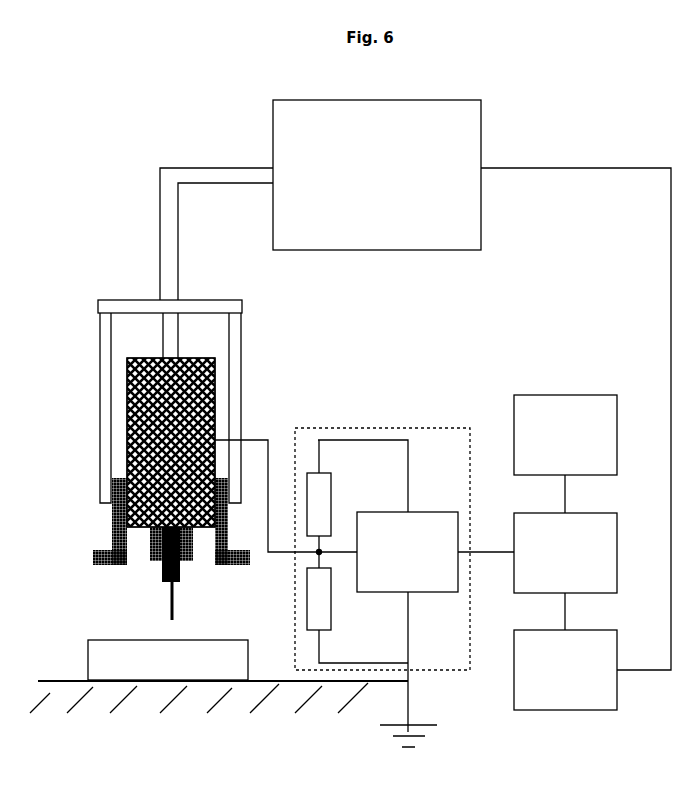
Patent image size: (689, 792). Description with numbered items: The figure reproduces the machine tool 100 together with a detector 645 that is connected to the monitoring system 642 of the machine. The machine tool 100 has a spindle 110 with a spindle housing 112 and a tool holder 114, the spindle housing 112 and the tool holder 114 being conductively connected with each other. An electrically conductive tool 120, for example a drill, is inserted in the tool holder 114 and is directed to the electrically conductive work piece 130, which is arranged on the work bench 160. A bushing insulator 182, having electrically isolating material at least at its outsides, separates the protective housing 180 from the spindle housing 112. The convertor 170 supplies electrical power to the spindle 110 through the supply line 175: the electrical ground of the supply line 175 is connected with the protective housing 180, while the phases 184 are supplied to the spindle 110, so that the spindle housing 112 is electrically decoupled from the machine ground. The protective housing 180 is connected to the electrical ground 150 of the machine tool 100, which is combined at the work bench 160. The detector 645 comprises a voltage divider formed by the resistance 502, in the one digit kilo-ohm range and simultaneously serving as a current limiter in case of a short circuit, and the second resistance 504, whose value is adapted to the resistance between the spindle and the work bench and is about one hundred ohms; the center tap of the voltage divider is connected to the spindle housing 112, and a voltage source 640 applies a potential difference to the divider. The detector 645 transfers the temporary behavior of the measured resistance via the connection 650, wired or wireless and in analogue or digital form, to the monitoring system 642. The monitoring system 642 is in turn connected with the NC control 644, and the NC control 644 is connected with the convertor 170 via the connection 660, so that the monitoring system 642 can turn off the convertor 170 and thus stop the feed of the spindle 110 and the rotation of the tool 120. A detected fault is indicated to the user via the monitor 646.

The machine tool 100 is at (145, 272).
The spindle 110 is at (192, 395).
The spindle housing 112 is at (127, 423).
The tool holder 114 is at (152, 553).
The tool 120 is at (172, 597).
The work piece 130 is at (168, 660).
The electrical ground 150 is at (408, 731).
The work bench 160 is at (145, 683).
The convertor 170 is at (377, 175).
The supply line 175 is at (205, 168).
The protective housing 180 is at (235, 335).
The bushing insulator 182 is at (115, 518).
The phases 184 is at (163, 318).
The resistance 502 is at (319, 497).
The second resistance 504 is at (323, 614).
The voltage source 640 is at (388, 586).
The monitoring system 642 is at (565, 571).
The NC control 644 is at (565, 670).
The detector 645 is at (436, 452).
The monitor 646 is at (565, 454).
The connection 650 is at (492, 552).
The connection 660 is at (671, 312).